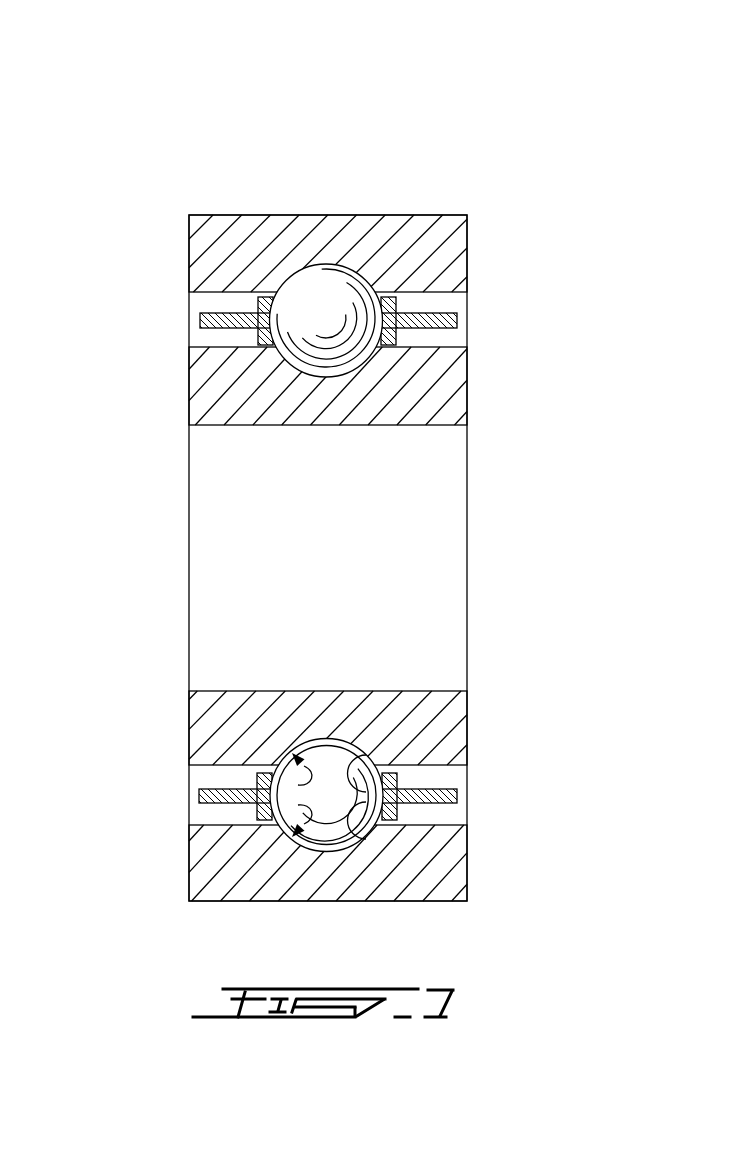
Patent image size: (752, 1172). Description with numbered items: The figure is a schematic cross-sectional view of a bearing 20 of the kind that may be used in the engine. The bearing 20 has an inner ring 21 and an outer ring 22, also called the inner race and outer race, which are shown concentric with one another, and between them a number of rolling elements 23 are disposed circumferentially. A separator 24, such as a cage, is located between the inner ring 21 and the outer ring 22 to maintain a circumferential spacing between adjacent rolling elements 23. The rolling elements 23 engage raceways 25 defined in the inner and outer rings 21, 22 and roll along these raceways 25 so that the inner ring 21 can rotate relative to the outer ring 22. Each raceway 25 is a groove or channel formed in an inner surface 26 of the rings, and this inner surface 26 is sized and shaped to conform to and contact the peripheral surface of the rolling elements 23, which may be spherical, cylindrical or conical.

The bearing 20 is at (576, 148).
The inner ring 21 is at (425, 392).
The outer ring 22 is at (445, 243).
The rolling element 23 is at (315, 287).
The separator 24 is at (200, 317).
The raceway 25 is at (298, 785).
The inner surface 26 is at (368, 787).